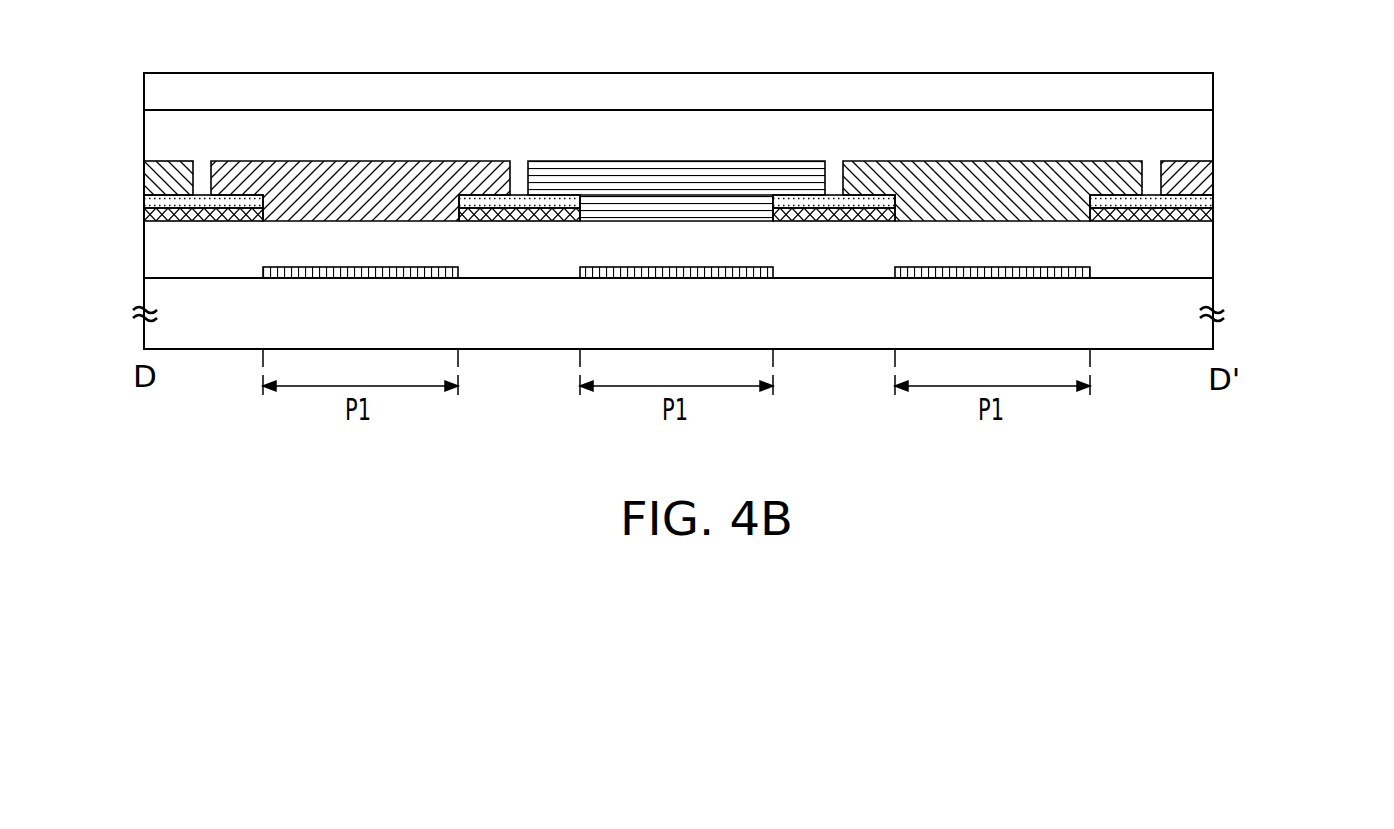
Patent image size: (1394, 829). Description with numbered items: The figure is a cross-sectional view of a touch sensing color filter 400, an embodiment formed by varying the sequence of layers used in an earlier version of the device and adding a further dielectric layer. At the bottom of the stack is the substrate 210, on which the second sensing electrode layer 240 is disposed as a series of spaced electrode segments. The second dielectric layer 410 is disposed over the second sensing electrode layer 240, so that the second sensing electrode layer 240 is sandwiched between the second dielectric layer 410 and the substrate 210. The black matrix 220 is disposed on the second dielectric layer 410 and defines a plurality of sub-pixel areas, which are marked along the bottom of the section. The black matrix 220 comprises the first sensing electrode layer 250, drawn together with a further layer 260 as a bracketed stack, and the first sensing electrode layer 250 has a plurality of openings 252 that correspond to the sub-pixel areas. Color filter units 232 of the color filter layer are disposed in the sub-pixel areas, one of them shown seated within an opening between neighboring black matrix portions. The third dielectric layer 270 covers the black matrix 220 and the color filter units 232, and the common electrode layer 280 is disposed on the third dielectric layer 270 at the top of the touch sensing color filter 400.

The touch sensing color filter 400 is at (1235, 452).
The common electrode layer 280 is at (1205, 90).
The third dielectric layer 270 is at (1203, 128).
The openings 252 is at (359, 207).
The color filter units 232 is at (1213, 178).
The black matrix 220 is at (756, 208).
The first sensing electrode layer 250 is at (1213, 203).
The second electrode layer 260 is at (1213, 213).
The second dielectric layer 410 is at (152, 248).
The second sensing electrode layer 240 is at (1090, 271).
The substrate 210 is at (1203, 333).